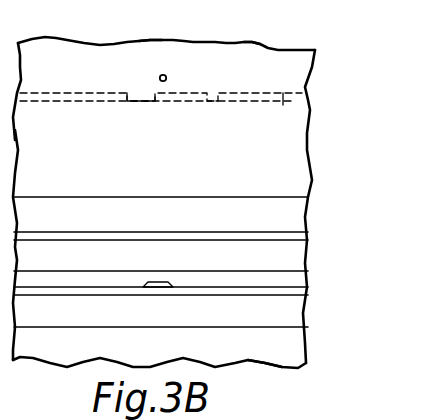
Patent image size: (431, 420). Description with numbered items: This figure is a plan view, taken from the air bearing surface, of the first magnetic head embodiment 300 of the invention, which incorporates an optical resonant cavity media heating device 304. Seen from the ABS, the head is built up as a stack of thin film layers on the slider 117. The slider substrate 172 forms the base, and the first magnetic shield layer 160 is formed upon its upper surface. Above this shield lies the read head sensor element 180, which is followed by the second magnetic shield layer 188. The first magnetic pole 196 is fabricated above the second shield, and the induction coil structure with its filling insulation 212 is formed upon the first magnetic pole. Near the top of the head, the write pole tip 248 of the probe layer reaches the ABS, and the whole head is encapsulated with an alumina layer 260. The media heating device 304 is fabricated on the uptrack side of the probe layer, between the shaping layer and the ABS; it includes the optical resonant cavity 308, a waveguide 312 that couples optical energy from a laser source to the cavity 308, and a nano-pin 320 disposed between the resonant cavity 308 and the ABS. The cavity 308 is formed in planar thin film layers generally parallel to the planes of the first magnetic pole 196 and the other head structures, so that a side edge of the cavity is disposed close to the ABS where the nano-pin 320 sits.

The magnetic head embodiment 300 is at (101, 30).
The optical resonant cavity media heating device 304 is at (152, 56).
The alumina layer 260 is at (253, 62).
The optical resonant cavity 308 is at (153, 94).
The write pole tip 248 is at (167, 75).
The nano-pin 320 is at (170, 96).
The waveguide 312 is at (284, 106).
The filling insulation 212 is at (195, 190).
The read head sensor element 180 is at (148, 281).
The first magnetic pole 196 is at (296, 222).
The second magnetic shield layer 188 is at (287, 261).
The first magnetic shield layer 160 is at (287, 312).
The slider substrate 172 is at (290, 348).
The slider 117 is at (258, 352).